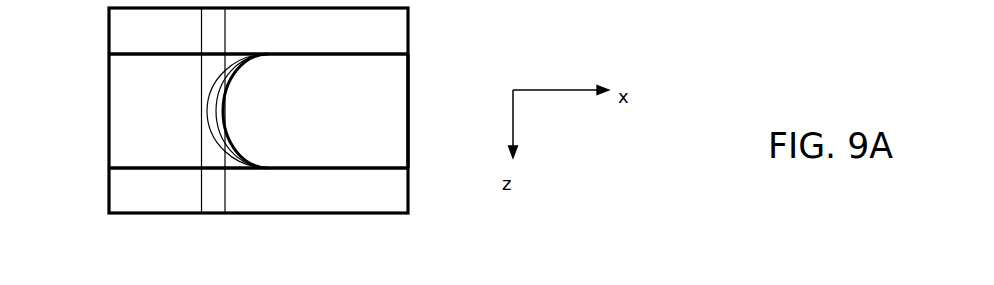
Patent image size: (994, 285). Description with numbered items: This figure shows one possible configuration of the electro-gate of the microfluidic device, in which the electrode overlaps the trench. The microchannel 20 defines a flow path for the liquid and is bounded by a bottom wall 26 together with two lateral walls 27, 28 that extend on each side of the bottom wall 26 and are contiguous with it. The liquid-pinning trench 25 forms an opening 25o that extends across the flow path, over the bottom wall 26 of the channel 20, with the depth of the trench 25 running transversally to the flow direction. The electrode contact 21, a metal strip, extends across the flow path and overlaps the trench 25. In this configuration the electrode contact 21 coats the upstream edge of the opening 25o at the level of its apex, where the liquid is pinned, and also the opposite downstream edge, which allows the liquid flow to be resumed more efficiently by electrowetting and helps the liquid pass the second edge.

The microchannel 20 is at (130, 113).
The electrode contact 21 is at (222, 216).
The liquid-pinning trench 25 is at (238, 69).
The opening of the trench 25o is at (242, 155).
The bottom wall 26 is at (398, 108).
The lateral wall 27 is at (387, 55).
The lateral wall 28 is at (109, 168).